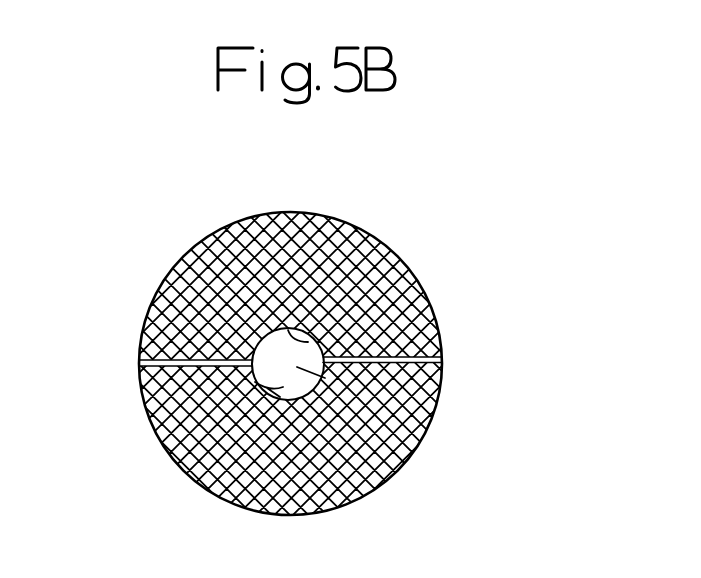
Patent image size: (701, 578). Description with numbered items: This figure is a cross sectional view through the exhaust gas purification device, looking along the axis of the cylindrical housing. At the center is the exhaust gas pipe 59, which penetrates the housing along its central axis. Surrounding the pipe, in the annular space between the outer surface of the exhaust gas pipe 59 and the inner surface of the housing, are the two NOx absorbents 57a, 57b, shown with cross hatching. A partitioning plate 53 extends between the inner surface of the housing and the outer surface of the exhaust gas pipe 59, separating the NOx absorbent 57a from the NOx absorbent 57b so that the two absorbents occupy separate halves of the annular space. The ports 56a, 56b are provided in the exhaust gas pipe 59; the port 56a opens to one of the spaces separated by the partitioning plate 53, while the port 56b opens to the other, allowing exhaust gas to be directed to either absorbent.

The partitioning plate 53 is at (435, 313).
The NOx absorbent 57a is at (335, 233).
The NOx absorbent 57b is at (348, 482).
The exhaust gas pipe 59 is at (441, 387).
The port 56a is at (373, 288).
The port 56b is at (243, 395).